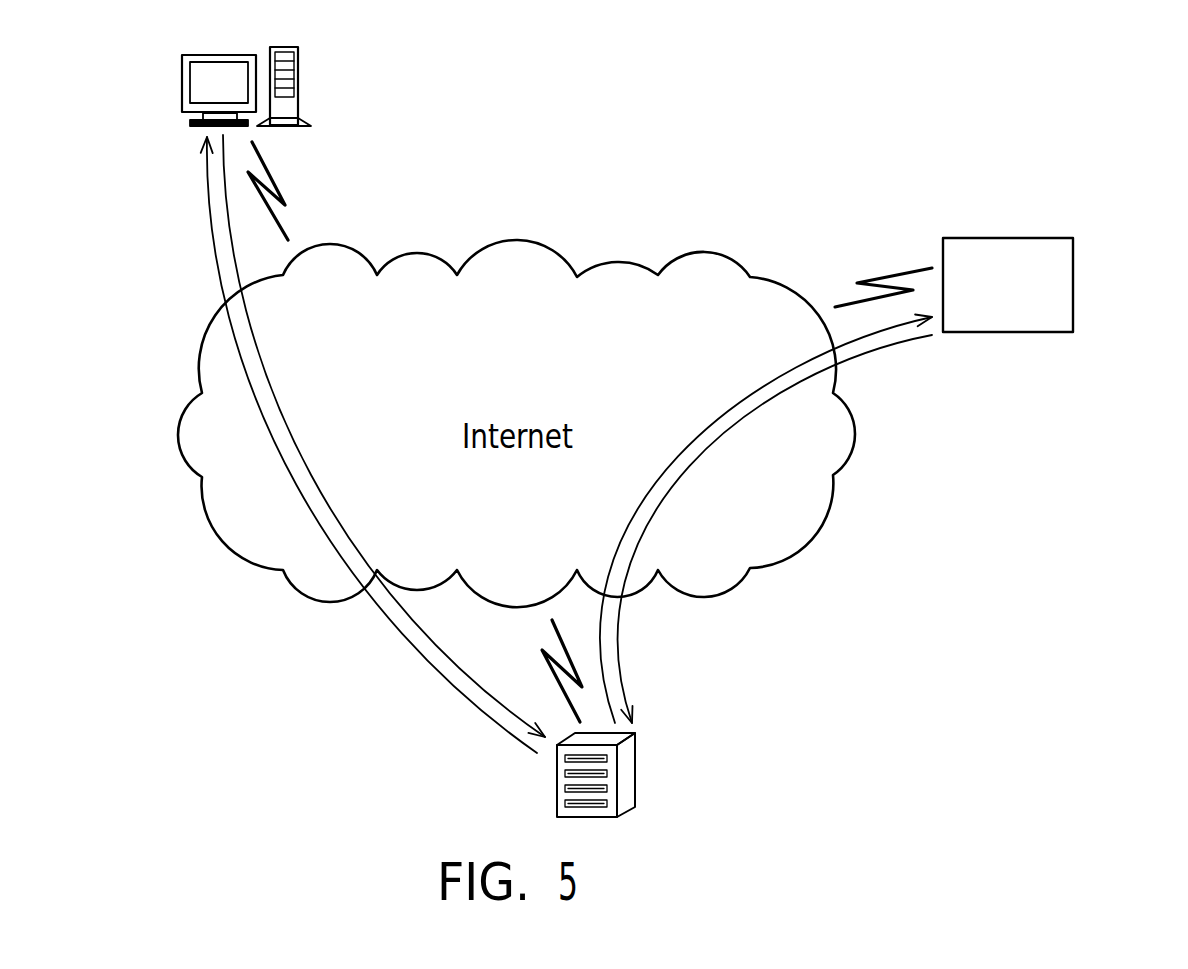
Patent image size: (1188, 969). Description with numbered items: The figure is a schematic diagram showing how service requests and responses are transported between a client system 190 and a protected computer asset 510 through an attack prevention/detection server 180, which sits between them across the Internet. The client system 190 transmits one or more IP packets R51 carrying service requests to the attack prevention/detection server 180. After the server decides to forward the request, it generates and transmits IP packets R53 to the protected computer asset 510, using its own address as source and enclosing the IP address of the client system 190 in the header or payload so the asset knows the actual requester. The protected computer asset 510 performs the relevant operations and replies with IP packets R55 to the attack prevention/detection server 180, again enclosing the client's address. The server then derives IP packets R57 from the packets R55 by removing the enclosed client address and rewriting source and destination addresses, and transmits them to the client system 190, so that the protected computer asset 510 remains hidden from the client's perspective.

The client system 190 is at (298, 85).
The protected computer asset 510 is at (1073, 285).
The attack prevention/detection server 180 is at (627, 775).
The IP packet R51 is at (477, 677).
The IP packet R53 is at (757, 392).
The IP packet R55 is at (887, 350).
The IP packet R57 is at (423, 665).